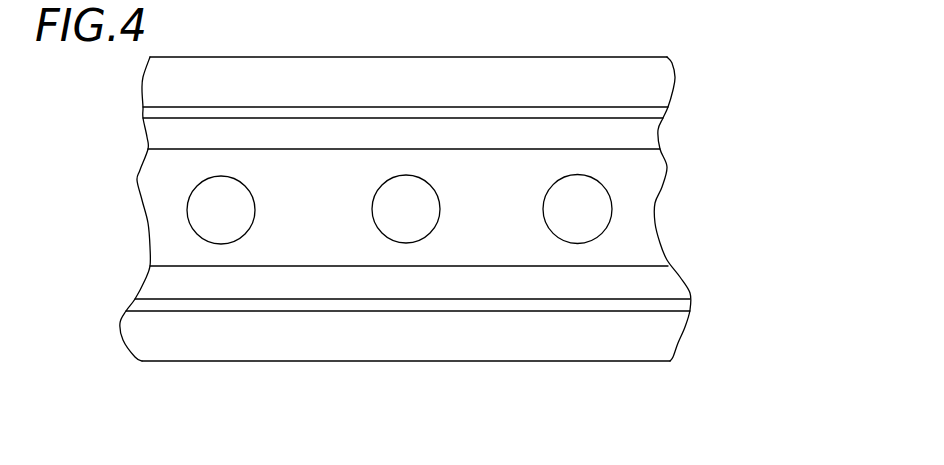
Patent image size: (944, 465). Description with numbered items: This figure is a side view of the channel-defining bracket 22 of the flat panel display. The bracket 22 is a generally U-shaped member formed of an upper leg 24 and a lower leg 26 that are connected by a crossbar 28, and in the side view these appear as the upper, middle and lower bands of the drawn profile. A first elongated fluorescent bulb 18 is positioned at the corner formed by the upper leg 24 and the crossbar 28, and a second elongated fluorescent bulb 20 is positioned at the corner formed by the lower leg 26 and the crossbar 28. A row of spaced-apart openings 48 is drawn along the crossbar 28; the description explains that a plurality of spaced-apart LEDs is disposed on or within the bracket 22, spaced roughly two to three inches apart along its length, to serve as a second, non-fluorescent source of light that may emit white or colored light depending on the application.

The channel-defining bracket 22 is at (704, 105).
The first elongated fluorescent bulb 18 is at (643, 130).
The second elongated fluorescent bulb 20 is at (670, 277).
The upper leg 24 is at (420, 94).
The lower leg 26 is at (414, 348).
The crossbar 28 is at (340, 194).
The holes 48 is at (253, 210).